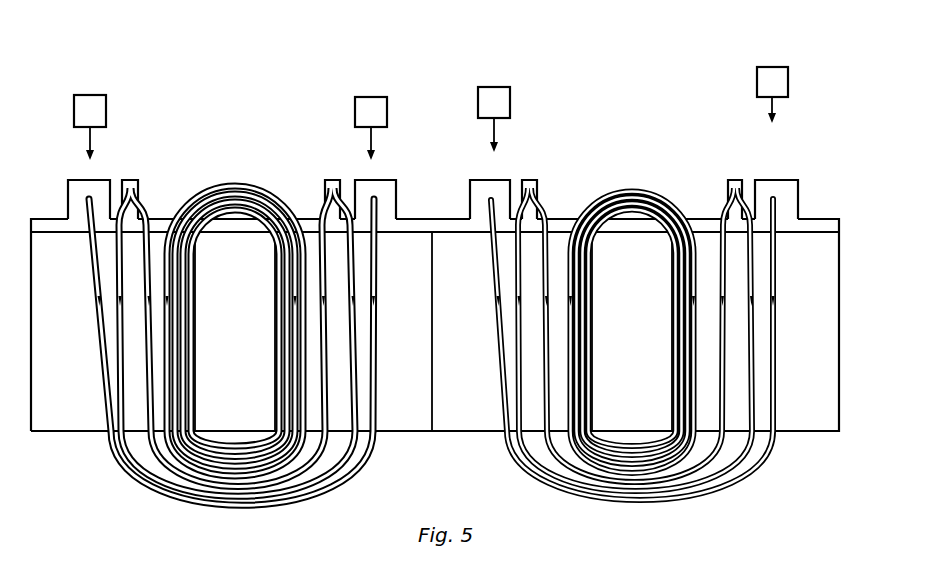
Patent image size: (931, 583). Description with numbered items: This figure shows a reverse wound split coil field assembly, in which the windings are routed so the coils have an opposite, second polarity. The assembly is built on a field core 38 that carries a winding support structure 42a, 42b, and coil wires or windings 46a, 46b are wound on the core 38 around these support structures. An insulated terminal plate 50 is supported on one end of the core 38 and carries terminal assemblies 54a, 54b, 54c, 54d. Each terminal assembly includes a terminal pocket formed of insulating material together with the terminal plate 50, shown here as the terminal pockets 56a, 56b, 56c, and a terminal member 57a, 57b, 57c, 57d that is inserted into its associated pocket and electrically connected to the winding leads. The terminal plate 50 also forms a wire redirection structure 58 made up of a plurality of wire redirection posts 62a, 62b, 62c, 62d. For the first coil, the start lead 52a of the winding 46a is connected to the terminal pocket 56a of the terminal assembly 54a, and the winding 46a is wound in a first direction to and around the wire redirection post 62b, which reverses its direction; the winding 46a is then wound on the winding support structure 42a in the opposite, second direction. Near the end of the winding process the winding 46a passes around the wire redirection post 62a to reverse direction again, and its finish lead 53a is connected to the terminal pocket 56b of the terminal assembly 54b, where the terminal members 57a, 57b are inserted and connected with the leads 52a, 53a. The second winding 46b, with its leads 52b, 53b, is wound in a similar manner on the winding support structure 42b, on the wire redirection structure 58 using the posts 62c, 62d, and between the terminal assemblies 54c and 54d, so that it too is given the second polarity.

The field core 38 is at (72, 412).
The winding support structure 42a is at (195, 368).
The winding support structure 42b is at (590, 374).
The winding 46a is at (258, 486).
The winding 46b is at (690, 485).
The terminal plate 50 is at (419, 234).
The start lead 52a is at (378, 210).
The lead 52b is at (778, 208).
The finish lead 53a is at (88, 202).
The lead 53b is at (490, 208).
The terminal assembly 54a is at (333, 108).
The terminal assembly 54b is at (62, 107).
The terminal assembly 54c is at (838, 96).
The terminal assembly 54d is at (557, 84).
The terminal pocket 56a is at (383, 179).
The terminal pocket 56b is at (78, 181).
The terminal pocket 56c is at (786, 179).
The terminal member 57a is at (375, 96).
The terminal member 57b is at (97, 94).
The terminal member 57c is at (773, 67).
The terminal member 57d is at (500, 86).
The wire redirection structure 58 is at (290, 180).
The wire redirection post 62a is at (331, 178).
The wire redirection post 62b is at (130, 178).
The wire redirection post 62c is at (735, 179).
The wire redirection post 62d is at (538, 179).